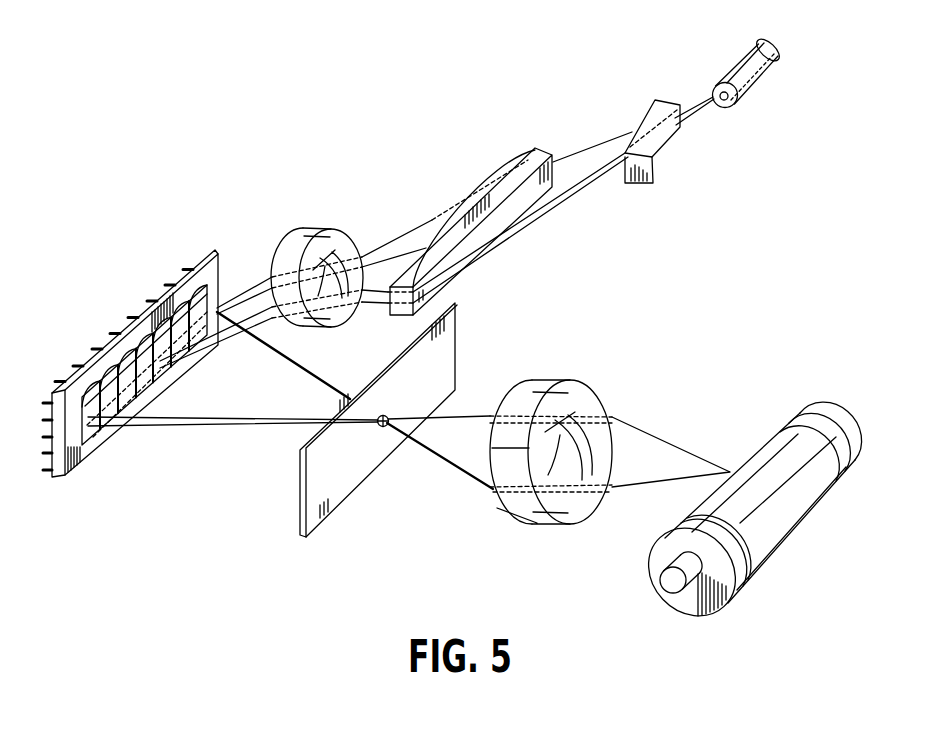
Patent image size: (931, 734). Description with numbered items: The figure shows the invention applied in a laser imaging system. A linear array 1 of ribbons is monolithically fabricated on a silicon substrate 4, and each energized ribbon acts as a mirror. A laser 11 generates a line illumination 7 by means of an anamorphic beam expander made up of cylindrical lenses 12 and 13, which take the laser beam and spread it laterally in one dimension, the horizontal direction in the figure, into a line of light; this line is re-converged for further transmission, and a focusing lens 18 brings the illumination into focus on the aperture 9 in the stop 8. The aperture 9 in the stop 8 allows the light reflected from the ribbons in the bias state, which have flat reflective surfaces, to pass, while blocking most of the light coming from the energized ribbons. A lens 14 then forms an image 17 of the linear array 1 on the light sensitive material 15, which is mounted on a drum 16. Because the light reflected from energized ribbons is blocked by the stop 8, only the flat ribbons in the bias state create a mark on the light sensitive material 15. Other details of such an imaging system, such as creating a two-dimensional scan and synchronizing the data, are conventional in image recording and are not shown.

The linear array 1 is at (107, 378).
The silicon substrate 4 is at (200, 258).
The line illumination 7 is at (175, 372).
The stop 8 is at (455, 352).
The aperture 9 is at (383, 428).
The laser 11 is at (740, 72).
The cylindrical lens 12 is at (653, 100).
The cylindrical lens 13 is at (510, 163).
The lens 14 is at (537, 395).
The light sensitive material 15 is at (803, 423).
The drum 16 is at (833, 410).
The image 17 is at (740, 466).
The focusing lens 18 is at (292, 242).